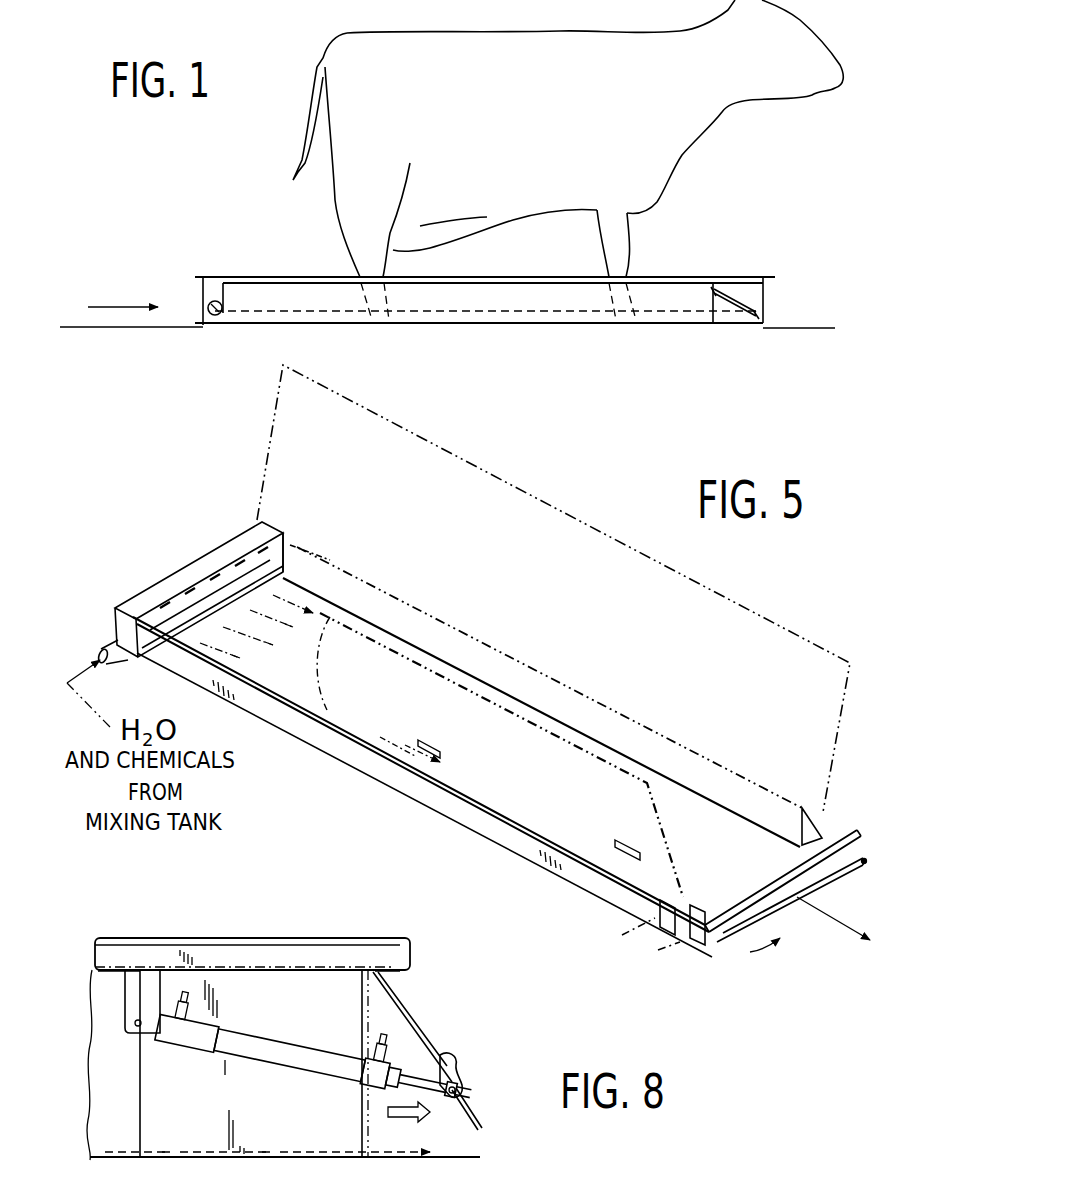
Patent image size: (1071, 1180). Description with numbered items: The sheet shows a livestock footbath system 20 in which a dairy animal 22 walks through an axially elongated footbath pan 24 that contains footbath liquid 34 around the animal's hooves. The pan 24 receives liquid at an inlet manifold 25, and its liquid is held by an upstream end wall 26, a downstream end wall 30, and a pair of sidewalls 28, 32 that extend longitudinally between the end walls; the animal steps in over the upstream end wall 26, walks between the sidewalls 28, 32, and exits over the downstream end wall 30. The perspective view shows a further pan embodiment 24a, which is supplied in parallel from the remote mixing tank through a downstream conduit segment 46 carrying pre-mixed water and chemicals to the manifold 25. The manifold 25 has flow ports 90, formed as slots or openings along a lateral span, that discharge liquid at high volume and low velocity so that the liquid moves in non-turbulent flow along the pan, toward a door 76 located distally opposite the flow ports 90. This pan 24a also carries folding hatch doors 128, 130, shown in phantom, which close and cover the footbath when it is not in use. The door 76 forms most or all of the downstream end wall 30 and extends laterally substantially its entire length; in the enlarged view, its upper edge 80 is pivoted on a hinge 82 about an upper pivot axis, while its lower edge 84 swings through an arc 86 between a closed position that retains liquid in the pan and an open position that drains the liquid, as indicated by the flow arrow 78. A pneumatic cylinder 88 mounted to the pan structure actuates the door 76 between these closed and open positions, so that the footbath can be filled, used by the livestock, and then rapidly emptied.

In FIG. 1, the footbath system 20 is at (205, 185).
In FIG. 1, the dairy animal 22 is at (514, 40).
In FIG. 1, the footbath pan 24 is at (297, 275).
In FIG. 5, the footbath pan 24a is at (355, 775).
In FIG. 1, the inlet manifold 25 is at (218, 317).
In FIG. 5, the inlet manifold 25 is at (300, 548).
In FIG. 5, the upstream end wall 26 is at (287, 548).
In FIG. 5, the sidewall 28 is at (355, 575).
In FIG. 5, the downstream end wall 30 is at (783, 857).
In FIG. 5, the sidewall 32 is at (507, 840).
In FIG. 1, the footbath liquid 34 is at (500, 323).
In FIG. 5, the downstream segment of outlet conduit 46 is at (112, 648).
In FIG. 5, the door 76 is at (828, 890).
In FIG. 8, the door 76 is at (425, 1043).
In FIG. 8, the drain flow arrow 78 is at (455, 1152).
In FIG. 8, the upper edge of door 80 is at (395, 985).
In FIG. 8, the hinge 82 is at (385, 940).
In FIG. 8, the lower edge of door 84 is at (515, 1100).
In FIG. 8, the arc 86 is at (385, 1110).
In FIG. 8, the pneumatic cylinder 88 is at (205, 1043).
In FIG. 5, the flow ports 90 is at (200, 612).
In FIG. 5, the folding hatch door 128 is at (565, 507).
In FIG. 5, the folding hatch door 130 is at (660, 815).